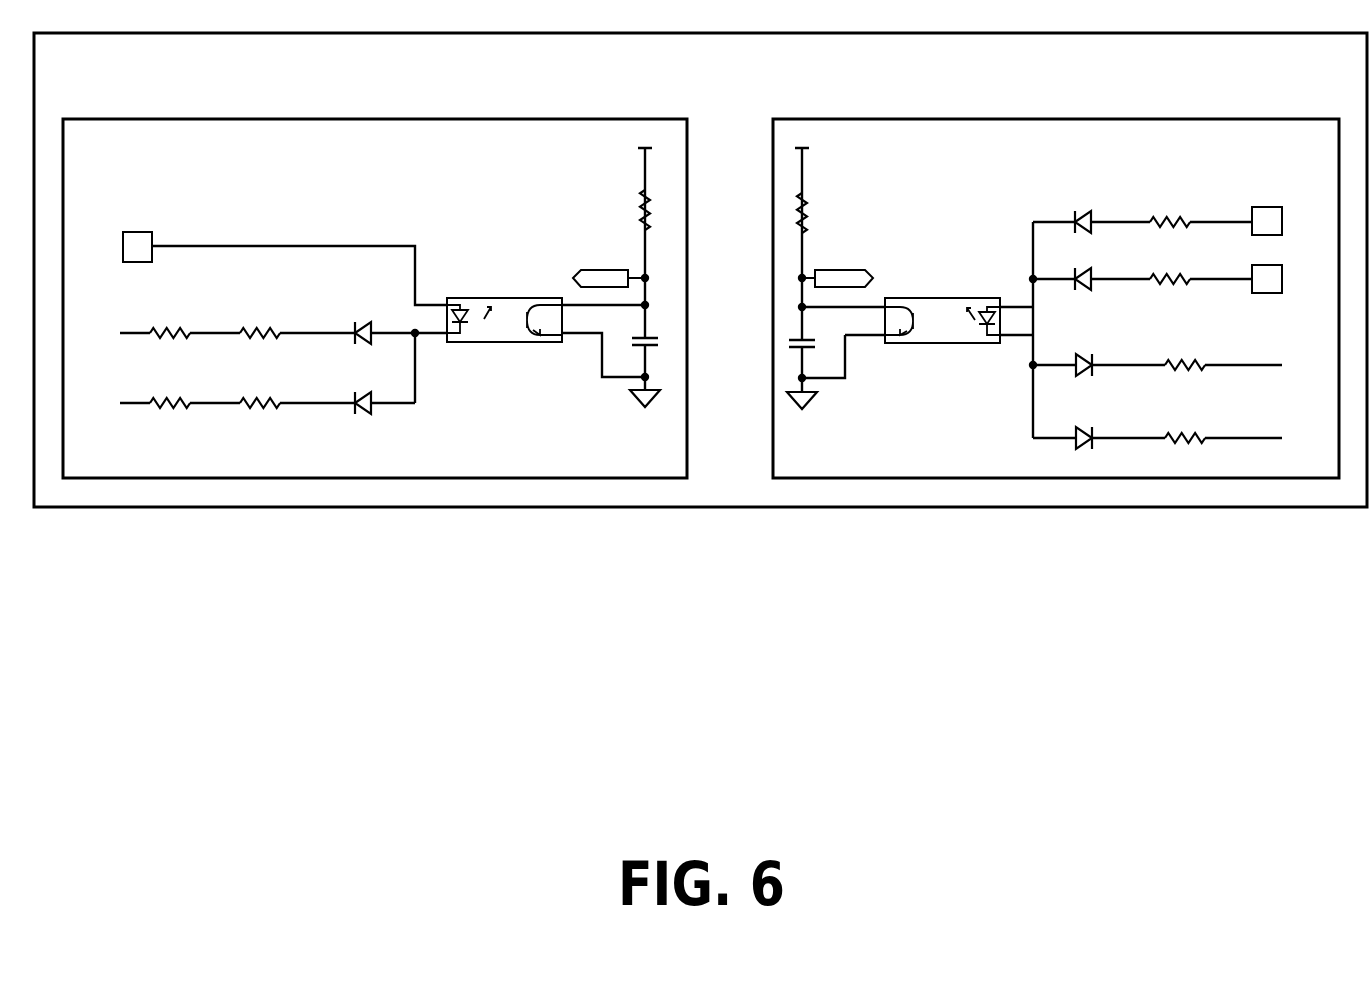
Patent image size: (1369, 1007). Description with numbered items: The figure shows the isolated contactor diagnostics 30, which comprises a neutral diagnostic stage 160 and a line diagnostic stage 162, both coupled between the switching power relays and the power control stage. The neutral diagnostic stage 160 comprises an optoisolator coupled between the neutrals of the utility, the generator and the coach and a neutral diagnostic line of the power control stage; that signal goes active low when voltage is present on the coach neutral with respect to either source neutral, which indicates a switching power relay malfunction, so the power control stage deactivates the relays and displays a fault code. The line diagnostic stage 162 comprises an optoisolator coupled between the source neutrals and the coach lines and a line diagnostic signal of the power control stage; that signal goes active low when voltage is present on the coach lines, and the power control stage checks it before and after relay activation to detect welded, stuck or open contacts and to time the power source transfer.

The isolated contactor diagnostics 30 is at (880, 33).
The neutral diagnostic stage 160 is at (343, 119).
The line diagnostic stage 162 is at (1090, 119).